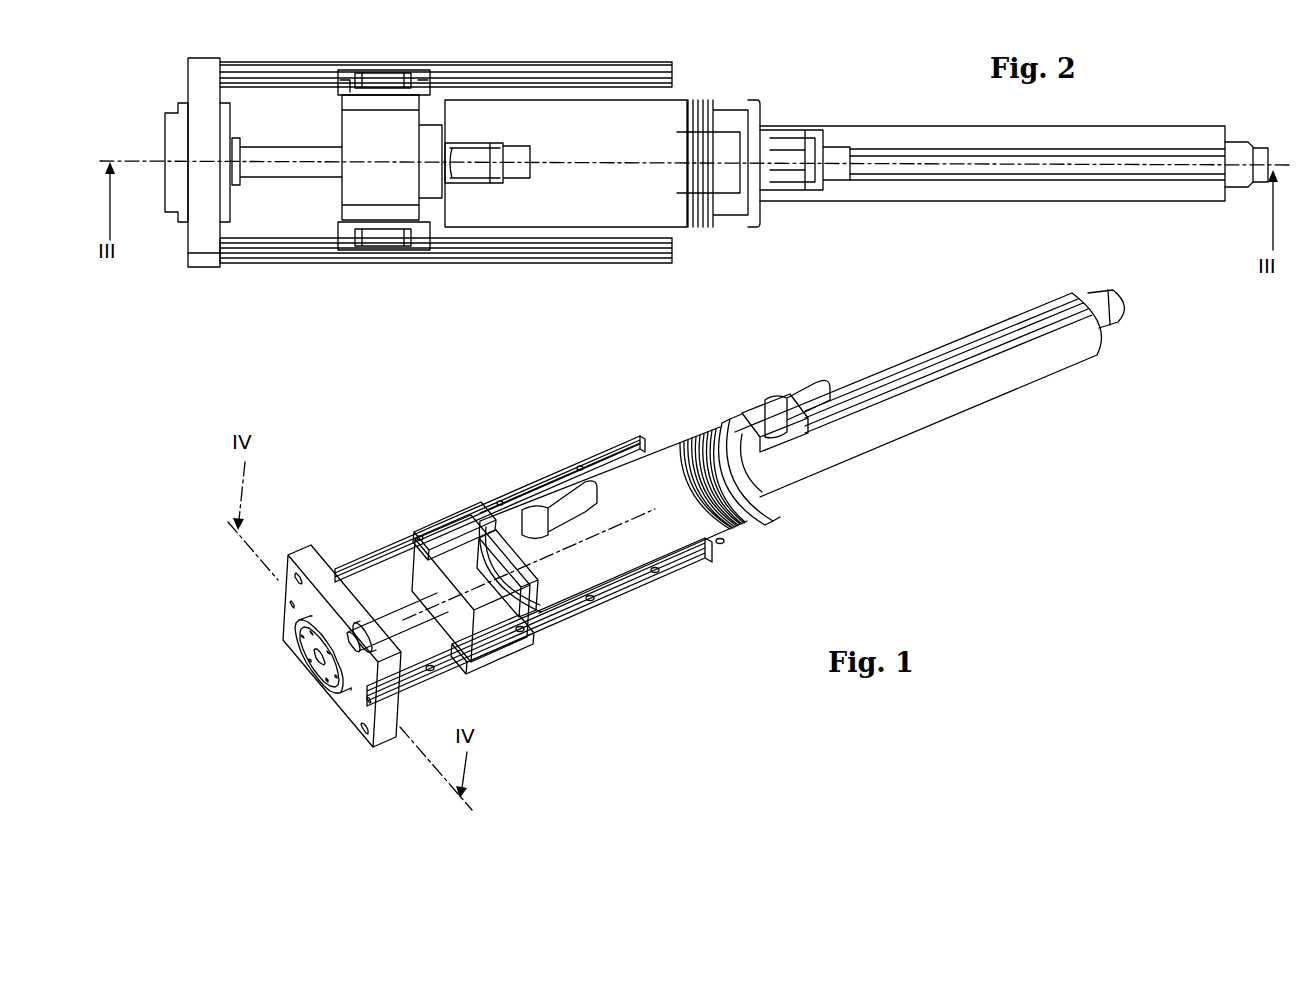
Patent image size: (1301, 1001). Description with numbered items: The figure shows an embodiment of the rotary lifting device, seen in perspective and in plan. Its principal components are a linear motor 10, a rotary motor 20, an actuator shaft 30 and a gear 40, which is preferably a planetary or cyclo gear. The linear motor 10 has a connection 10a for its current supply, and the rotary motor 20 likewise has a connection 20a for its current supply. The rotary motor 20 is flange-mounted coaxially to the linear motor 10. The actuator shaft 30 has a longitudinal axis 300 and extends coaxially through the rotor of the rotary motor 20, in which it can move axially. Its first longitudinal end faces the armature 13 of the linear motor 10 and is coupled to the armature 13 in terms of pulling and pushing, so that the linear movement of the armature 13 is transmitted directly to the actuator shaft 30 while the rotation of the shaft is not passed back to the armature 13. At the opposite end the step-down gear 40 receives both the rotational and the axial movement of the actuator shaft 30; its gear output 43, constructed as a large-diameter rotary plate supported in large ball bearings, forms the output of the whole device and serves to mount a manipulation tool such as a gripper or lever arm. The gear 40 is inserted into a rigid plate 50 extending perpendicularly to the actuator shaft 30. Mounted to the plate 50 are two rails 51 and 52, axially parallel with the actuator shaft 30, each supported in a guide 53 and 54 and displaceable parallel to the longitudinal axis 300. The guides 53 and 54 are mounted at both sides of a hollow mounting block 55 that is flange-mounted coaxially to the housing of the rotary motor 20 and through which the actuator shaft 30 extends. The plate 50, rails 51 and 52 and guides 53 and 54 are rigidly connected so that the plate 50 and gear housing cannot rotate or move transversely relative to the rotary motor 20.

In FIG. 2, the linear motor 10 is at (893, 200).
In FIG. 1, the linear motor 10 is at (838, 460).
In FIG. 2, the connection 10a is at (833, 140).
In FIG. 1, the connection 10a is at (782, 398).
In FIG. 2, the armature 13 is at (1240, 135).
In FIG. 1, the armature 13 is at (1108, 328).
In FIG. 2, the rotary motor 20 is at (503, 212).
In FIG. 1, the rotary motor 20 is at (640, 560).
In FIG. 2, the connection 20a is at (492, 152).
In FIG. 1, the connection 20a is at (545, 497).
In FIG. 2, the actuator shaft 30 is at (278, 142).
In FIG. 1, the actuator shaft 30 is at (405, 636).
In FIG. 2, the gear 40 is at (150, 128).
In FIG. 1, the gear 40 is at (300, 700).
In FIG. 1, the gear output 43 is at (292, 666).
In FIG. 2, the plate 50 is at (198, 238).
In FIG. 1, the plate 50 is at (297, 553).
In FIG. 2, the rail 51 is at (290, 76).
In FIG. 1, the rail 51 is at (365, 553).
In FIG. 2, the rail 52 is at (267, 252).
In FIG. 1, the rail 52 is at (565, 615).
In FIG. 2, the guide 53 is at (408, 78).
In FIG. 1, the guide 53 is at (400, 545).
In FIG. 2, the guide 54 is at (340, 243).
In FIG. 1, the guide 54 is at (500, 655).
In FIG. 2, the mounting block 55 is at (350, 186).
In FIG. 1, the mounting block 55 is at (455, 540).
In FIG. 1, the longitudinal axis 300 is at (636, 440).